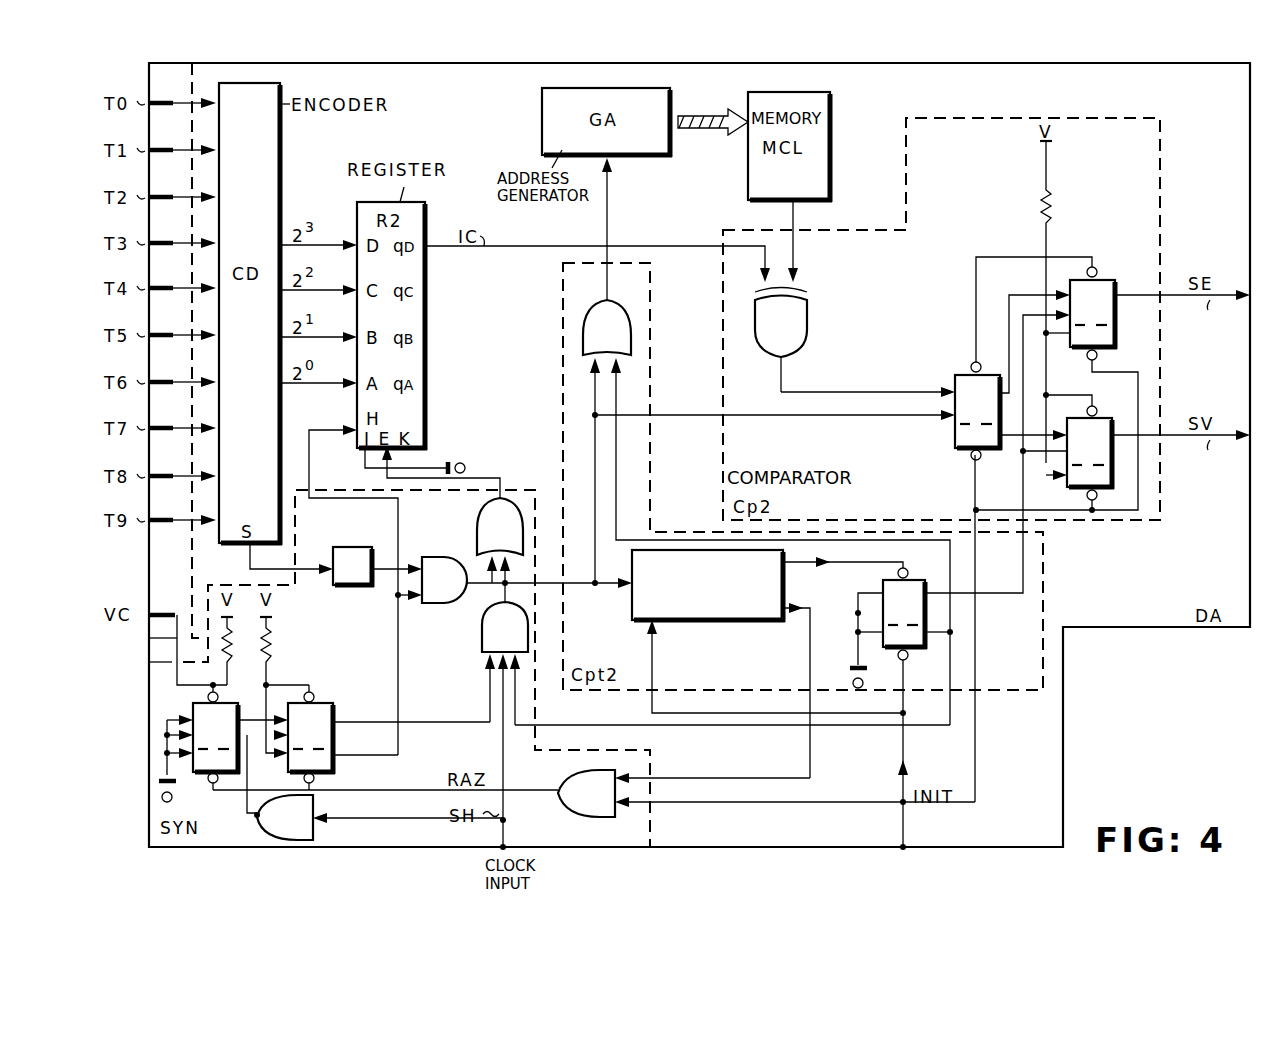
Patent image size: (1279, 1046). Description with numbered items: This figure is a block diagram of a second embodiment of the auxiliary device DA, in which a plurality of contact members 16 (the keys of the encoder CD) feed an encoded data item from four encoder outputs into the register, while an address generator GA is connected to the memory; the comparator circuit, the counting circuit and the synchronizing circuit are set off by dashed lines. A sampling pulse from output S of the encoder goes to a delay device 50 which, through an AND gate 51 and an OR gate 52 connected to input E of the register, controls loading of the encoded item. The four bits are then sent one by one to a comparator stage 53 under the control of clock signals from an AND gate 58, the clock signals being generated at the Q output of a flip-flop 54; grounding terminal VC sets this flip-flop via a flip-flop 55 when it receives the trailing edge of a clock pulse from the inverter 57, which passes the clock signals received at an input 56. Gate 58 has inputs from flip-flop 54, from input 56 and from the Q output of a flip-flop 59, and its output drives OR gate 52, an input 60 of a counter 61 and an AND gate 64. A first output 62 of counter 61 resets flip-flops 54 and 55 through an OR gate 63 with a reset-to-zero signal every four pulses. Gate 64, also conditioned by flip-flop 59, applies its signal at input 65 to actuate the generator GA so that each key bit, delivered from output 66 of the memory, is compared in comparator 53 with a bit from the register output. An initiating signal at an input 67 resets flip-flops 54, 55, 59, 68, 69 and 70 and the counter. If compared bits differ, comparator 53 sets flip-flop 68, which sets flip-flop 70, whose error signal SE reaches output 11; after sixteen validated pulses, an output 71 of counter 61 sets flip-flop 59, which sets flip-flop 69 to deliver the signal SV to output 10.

The output 10 is at (1246, 448).
The output 11 is at (1240, 308).
The plurality of contact members 16 is at (400, 455).
The delay device 50 is at (353, 567).
The AND gate 51 is at (444, 580).
The OR gate 52 is at (500, 540).
The comparator stage 53 is at (855, 343).
The flip-flop 54 is at (325, 700).
The flip-flop 55 is at (229, 700).
The input 56 is at (500, 840).
The inverter 57 is at (378, 817).
The AND gate 58 is at (505, 654).
The flip-flop 59 is at (912, 650).
The input 60 is at (629, 590).
The counter 61 is at (708, 586).
The first output 62 is at (786, 614).
The OR gate 63 is at (766, 793).
The AND gate 64 is at (766, 512).
The input 65 is at (609, 160).
The output 66 is at (785, 202).
The input 67 is at (900, 844).
The flip-flop 68 is at (962, 360).
The flip-flop 69 is at (1104, 418).
The flip-flop 70 is at (1108, 278).
The output 71 is at (790, 566).